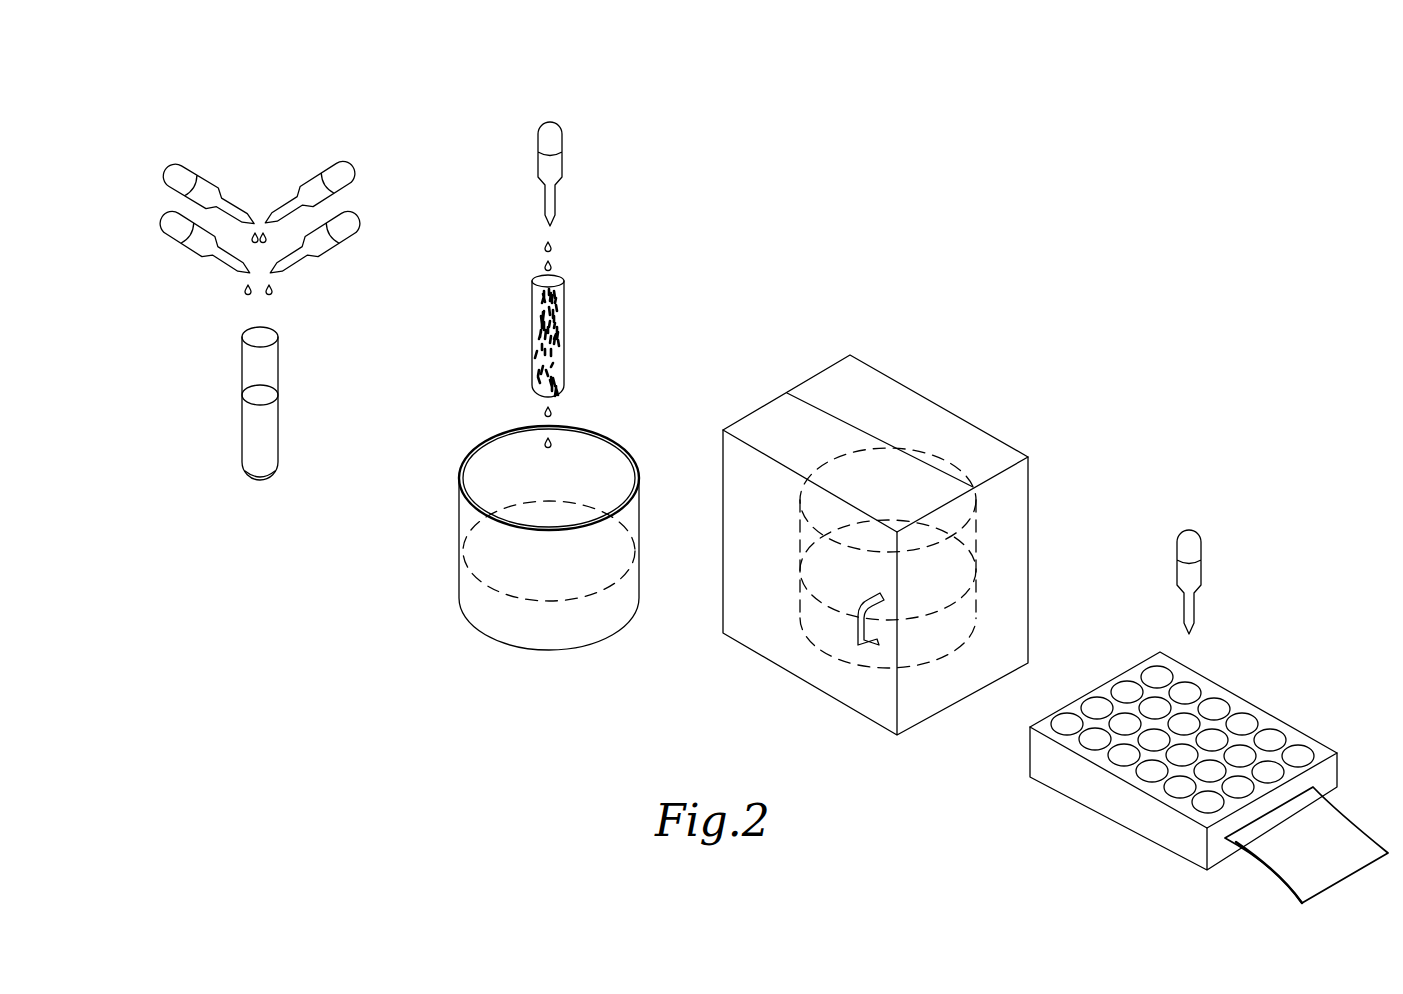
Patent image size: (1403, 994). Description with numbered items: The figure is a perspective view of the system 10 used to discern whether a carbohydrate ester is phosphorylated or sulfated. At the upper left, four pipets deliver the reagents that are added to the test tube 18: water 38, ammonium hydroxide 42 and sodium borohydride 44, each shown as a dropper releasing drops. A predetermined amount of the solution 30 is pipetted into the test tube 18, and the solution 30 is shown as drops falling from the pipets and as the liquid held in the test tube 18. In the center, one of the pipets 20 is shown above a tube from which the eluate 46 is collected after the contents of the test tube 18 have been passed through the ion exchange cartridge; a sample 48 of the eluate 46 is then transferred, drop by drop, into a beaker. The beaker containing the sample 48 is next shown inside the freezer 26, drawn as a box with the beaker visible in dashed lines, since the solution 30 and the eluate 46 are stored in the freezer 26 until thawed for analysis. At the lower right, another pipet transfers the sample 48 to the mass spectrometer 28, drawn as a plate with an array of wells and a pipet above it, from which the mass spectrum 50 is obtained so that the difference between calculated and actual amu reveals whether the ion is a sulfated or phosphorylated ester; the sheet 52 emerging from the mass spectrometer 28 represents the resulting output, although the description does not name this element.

The system 10 is at (168, 113).
The test tube 18 is at (268, 385).
The pipet 20 is at (538, 132).
The freezer 26 is at (977, 443).
The mass spectrometer 28 is at (1288, 742).
The solution 30 is at (188, 247).
The water 38 is at (313, 173).
The ammonium hydroxide 42 is at (208, 176).
The sodium borohydride 44 is at (328, 247).
The eluate 46 is at (556, 310).
The sample 48 is at (545, 436).
The mass spectrum 50 is at (1200, 573).
The test strip 52 is at (1328, 832).